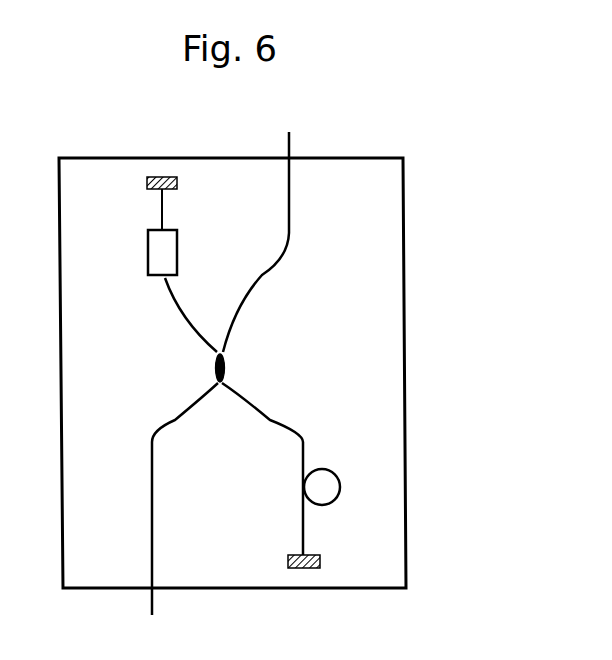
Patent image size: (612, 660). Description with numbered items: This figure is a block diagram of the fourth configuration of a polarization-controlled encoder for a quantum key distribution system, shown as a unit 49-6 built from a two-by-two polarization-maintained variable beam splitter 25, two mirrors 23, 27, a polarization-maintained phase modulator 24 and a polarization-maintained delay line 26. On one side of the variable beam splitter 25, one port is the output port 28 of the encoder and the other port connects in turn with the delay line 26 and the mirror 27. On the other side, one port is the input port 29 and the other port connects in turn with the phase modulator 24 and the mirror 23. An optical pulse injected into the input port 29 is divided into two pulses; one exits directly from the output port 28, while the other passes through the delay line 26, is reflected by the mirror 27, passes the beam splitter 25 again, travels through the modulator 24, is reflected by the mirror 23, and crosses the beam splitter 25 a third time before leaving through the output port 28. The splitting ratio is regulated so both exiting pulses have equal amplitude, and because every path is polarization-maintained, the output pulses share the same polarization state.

The mirror 23 is at (192, 197).
The polarization-maintained phase modulator 24 is at (190, 254).
The 2×2 polarization-maintained variable beam splitter 25 is at (185, 334).
The polarization-maintained delay line 26 is at (307, 469).
The mirror 27 is at (334, 556).
The output port 28 is at (185, 508).
The input port 29 is at (285, 229).
The microfluidic chip 49-6 is at (294, 373).